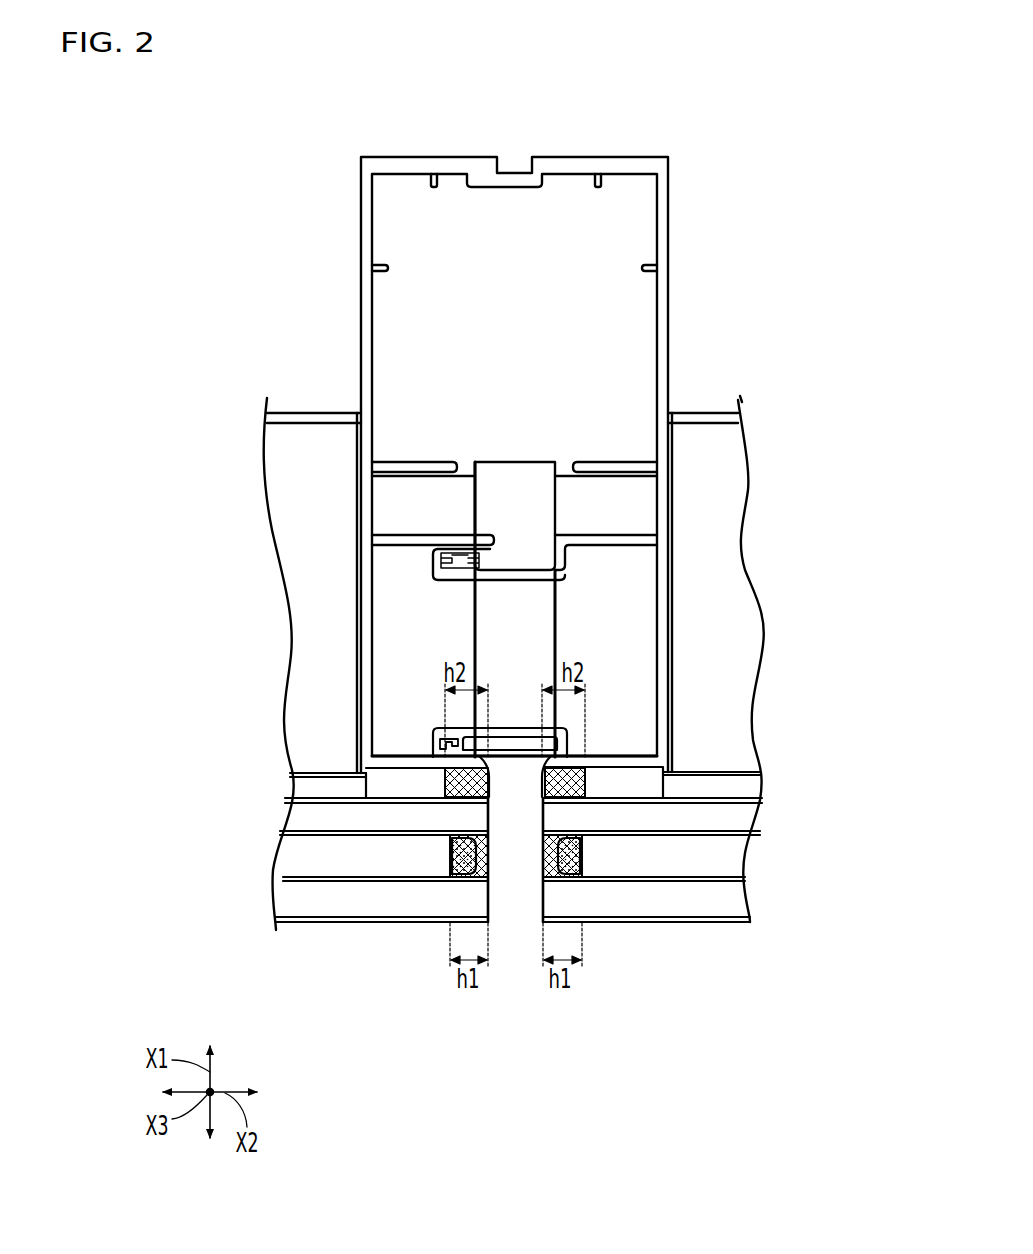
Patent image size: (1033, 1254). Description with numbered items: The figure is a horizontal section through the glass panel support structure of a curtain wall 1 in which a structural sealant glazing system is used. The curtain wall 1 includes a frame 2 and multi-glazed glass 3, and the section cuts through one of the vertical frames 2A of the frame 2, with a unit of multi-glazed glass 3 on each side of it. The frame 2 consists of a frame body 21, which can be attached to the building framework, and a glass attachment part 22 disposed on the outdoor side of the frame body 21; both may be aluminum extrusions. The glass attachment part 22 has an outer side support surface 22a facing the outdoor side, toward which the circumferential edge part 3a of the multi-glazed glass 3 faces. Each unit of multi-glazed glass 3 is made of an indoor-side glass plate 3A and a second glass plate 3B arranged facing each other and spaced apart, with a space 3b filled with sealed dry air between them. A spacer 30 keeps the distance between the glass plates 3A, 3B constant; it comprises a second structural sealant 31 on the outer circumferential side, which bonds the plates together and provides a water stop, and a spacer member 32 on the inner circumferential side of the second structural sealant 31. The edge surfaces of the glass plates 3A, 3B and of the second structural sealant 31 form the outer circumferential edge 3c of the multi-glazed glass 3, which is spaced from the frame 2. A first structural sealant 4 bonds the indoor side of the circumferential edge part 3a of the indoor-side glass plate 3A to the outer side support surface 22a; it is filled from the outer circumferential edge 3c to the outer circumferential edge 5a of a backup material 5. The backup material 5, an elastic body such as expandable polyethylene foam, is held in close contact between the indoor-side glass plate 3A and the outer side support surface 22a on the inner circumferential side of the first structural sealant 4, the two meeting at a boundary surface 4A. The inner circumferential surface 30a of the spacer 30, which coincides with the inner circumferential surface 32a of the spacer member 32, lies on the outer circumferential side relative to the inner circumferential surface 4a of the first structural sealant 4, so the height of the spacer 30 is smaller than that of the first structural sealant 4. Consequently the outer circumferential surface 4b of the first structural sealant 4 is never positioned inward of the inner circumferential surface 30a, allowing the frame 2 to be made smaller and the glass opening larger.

The curtain wall 1 is at (265, 163).
The frame 2 is at (578, 465).
The vertical frame 2A is at (674, 235).
The frame body 21 is at (673, 612).
The glass attachment part 22 is at (690, 818).
The outer side support surface 22a is at (647, 768).
The multi-glazed glass 3 is at (312, 923).
The indoor-side glass plate 3A is at (317, 797).
The glass plate 3B is at (292, 924).
The circumferential edge part 3a is at (488, 798).
The space 3b is at (345, 862).
The outer circumferential edge 3c is at (540, 818).
The spacer 30 is at (514, 944).
The inner circumferential surface of the spacer 30a is at (514, 953).
The second structural sealant 31 is at (465, 860).
The spacer member 32 is at (455, 860).
The inner circumferential surface of the spacer member 32a is at (450, 852).
The first structural sealant 4 is at (524, 736).
The boundary surface 4A is at (425, 793).
The inner circumferential surface of the first structural sealant 4a is at (443, 782).
The outer circumferential surface of the first structural sealant 4b is at (542, 787).
The backup material 5 is at (627, 729).
The outer circumferential edge of the backup material 5a is at (566, 751).